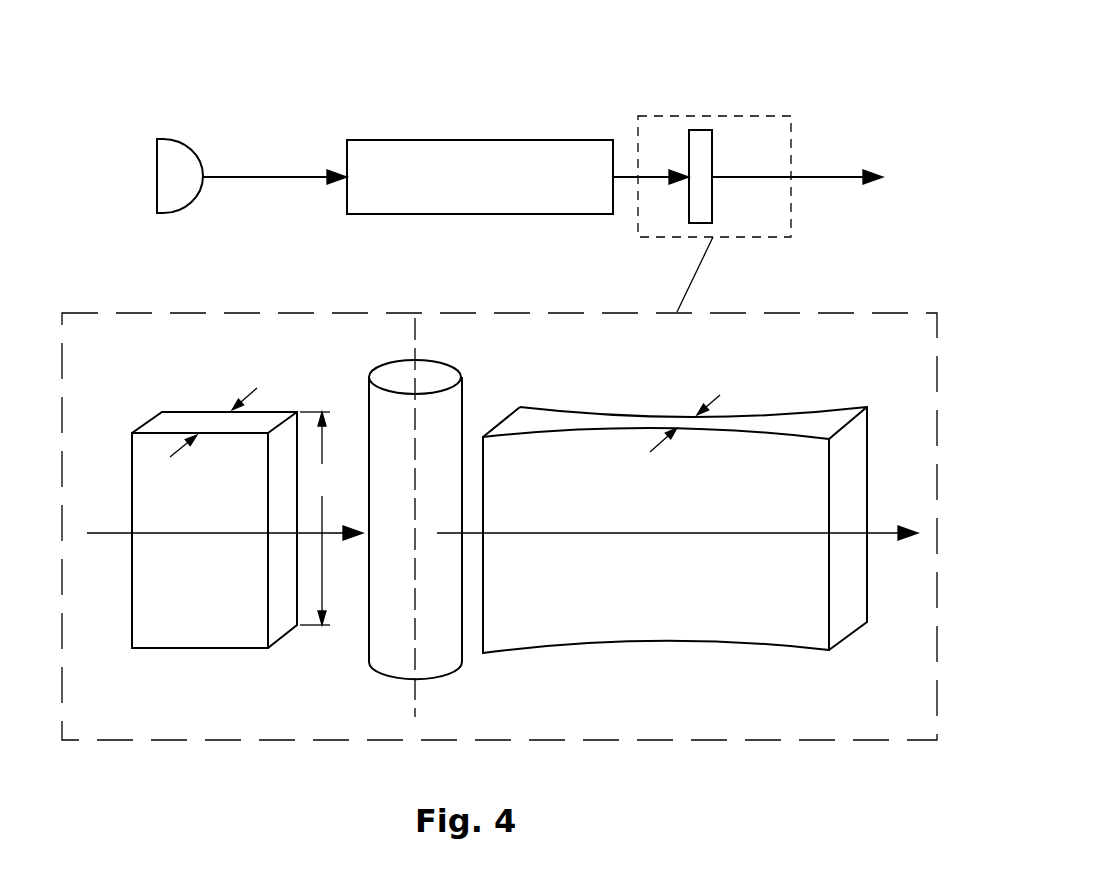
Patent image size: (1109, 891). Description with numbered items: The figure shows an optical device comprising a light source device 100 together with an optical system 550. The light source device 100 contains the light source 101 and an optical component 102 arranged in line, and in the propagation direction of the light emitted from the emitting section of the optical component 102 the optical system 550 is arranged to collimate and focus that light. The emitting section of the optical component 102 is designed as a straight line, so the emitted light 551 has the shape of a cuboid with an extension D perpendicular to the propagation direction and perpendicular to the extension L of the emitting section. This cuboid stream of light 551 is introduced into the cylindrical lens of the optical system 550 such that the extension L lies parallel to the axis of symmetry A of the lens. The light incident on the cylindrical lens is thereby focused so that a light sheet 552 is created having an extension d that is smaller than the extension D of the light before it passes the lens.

The light source device 100 is at (787, 64).
The light source 101 is at (157, 159).
The optical component 102 is at (543, 140).
The optical system 550 is at (703, 132).
The light 551 is at (100, 537).
The light sheet 552 is at (695, 532).